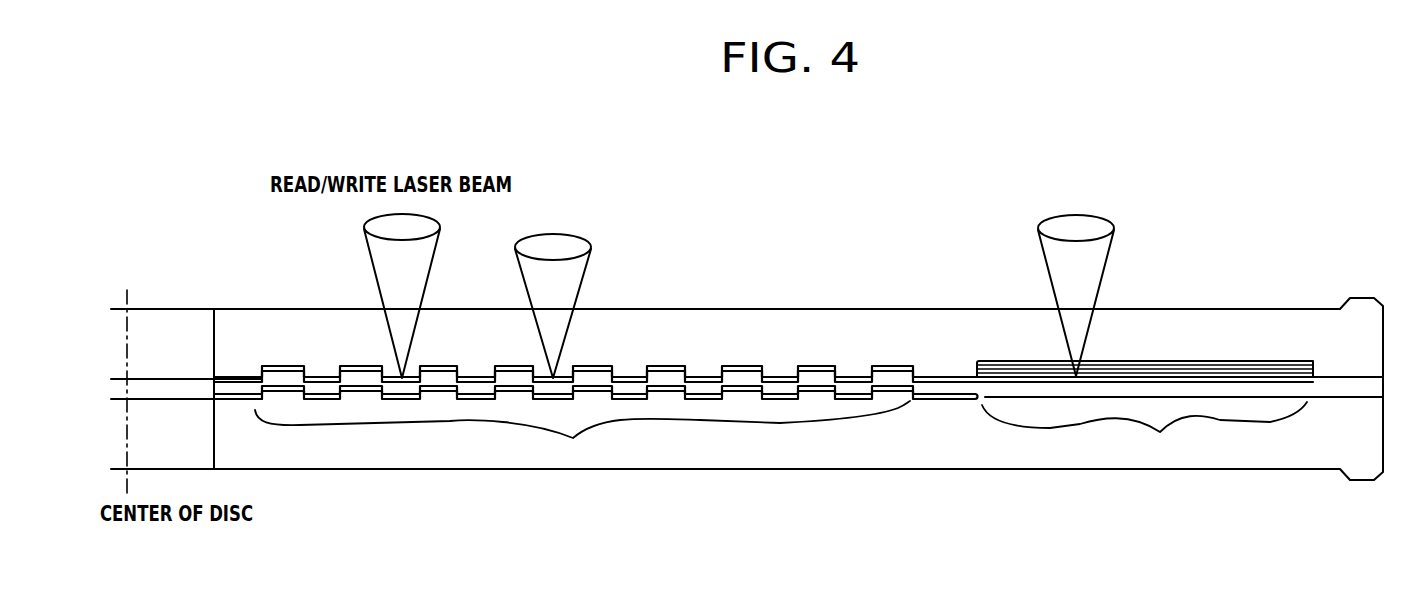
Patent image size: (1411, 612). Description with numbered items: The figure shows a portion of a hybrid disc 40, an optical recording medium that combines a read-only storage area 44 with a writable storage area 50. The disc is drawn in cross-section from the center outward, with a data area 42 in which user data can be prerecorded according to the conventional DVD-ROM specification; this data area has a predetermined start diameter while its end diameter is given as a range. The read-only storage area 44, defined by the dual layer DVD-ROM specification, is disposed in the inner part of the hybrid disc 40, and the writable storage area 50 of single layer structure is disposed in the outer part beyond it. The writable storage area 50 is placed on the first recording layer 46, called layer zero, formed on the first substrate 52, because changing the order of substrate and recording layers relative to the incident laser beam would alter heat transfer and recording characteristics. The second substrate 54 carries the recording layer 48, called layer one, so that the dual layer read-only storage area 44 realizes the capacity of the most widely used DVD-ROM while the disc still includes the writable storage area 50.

The hybrid disc 40 is at (1083, 543).
The data area 42 is at (402, 435).
The read-only storage area 44 is at (582, 434).
The first recording layer 46 is at (678, 363).
The recording layer 48 is at (712, 399).
The writable storage area 50 is at (1145, 413).
The first substrate 52 is at (845, 335).
The second substrate 54 is at (845, 448).